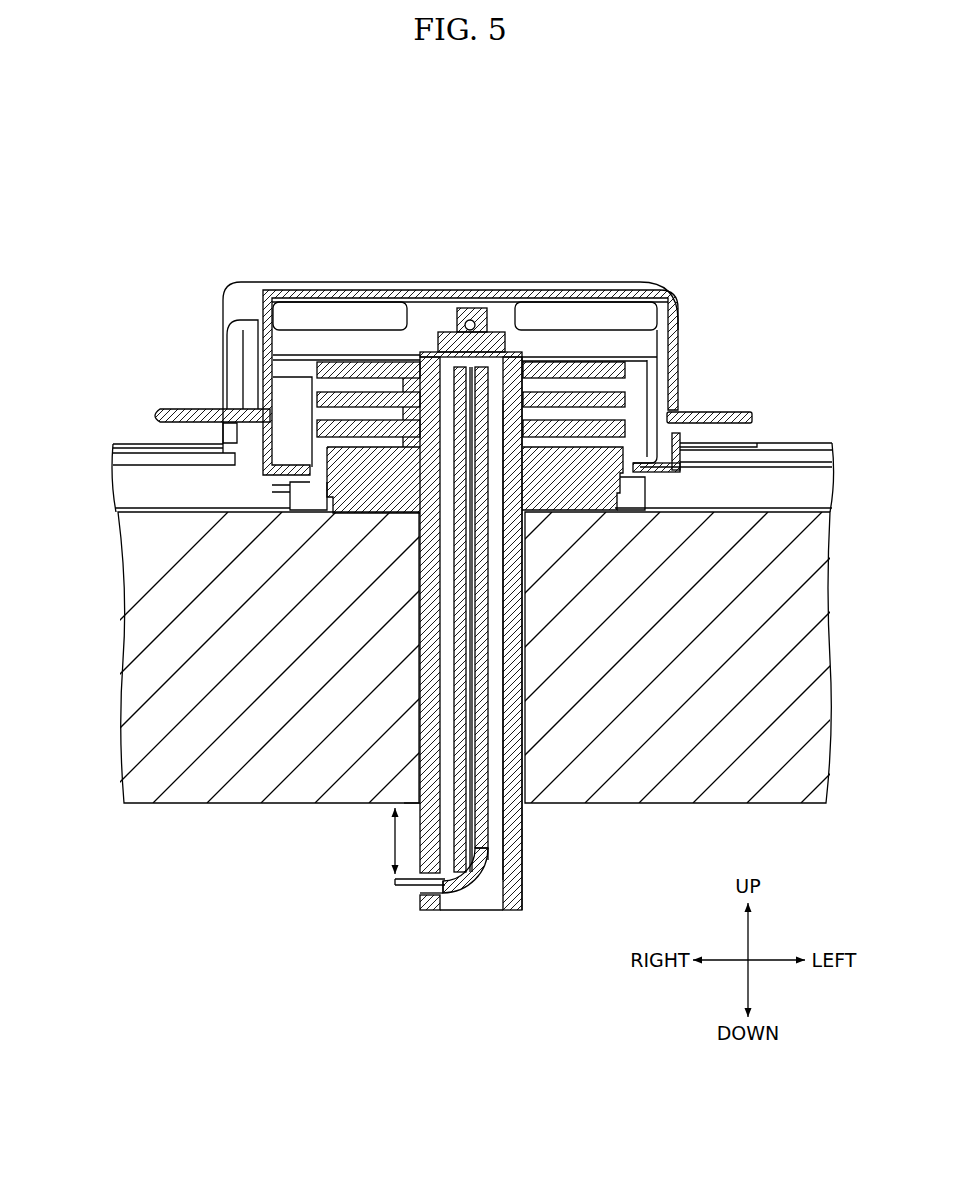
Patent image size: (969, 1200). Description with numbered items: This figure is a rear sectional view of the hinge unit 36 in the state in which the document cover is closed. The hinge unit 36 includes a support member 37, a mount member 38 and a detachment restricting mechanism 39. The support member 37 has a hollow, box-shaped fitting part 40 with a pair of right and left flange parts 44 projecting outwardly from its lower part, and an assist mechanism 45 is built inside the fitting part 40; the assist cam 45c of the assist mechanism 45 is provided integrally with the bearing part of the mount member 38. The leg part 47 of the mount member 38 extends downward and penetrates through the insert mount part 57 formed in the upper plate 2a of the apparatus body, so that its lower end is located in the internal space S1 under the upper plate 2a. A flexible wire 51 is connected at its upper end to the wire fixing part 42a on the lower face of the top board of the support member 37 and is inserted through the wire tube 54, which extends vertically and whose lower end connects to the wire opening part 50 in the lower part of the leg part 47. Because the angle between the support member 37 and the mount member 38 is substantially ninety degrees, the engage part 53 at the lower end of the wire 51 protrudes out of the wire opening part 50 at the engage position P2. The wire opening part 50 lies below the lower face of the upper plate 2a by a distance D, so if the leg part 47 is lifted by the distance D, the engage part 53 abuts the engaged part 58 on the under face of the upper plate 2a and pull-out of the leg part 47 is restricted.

The hinge unit 36 is at (745, 238).
The support member 37 is at (600, 280).
The fitting part 40 is at (358, 290).
The wire fixing part 42a is at (470, 320).
The assist cam 45c is at (430, 340).
The assist mechanism 45 is at (471, 437).
The flange part 44 is at (190, 408).
The insert mount part 57 is at (510, 545).
The engaged part 58 is at (404, 801).
The upper plate 2a is at (135, 776).
The internal space S1 is at (140, 832).
The mount member 38 is at (535, 823).
The leg part 47 is at (523, 880).
The detachment restricting mechanism 39 is at (490, 872).
The engage part 53 is at (395, 882).
The engage position P2 is at (392, 895).
The wire opening part 50 is at (418, 893).
The wire 51 is at (452, 898).
The wire tube 54 is at (485, 870).
The distance D is at (385, 841).